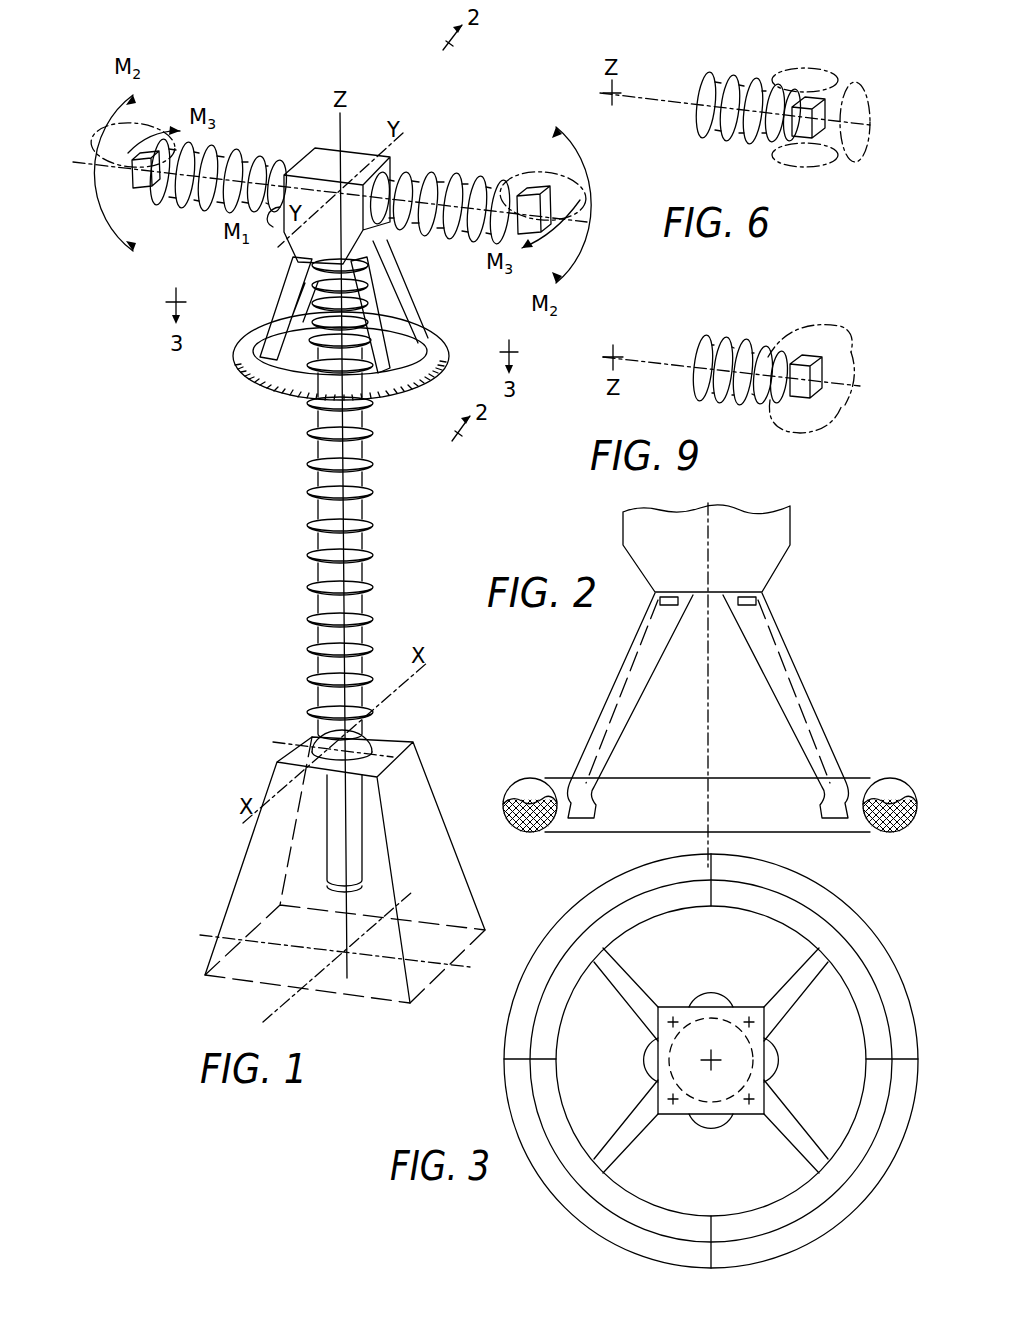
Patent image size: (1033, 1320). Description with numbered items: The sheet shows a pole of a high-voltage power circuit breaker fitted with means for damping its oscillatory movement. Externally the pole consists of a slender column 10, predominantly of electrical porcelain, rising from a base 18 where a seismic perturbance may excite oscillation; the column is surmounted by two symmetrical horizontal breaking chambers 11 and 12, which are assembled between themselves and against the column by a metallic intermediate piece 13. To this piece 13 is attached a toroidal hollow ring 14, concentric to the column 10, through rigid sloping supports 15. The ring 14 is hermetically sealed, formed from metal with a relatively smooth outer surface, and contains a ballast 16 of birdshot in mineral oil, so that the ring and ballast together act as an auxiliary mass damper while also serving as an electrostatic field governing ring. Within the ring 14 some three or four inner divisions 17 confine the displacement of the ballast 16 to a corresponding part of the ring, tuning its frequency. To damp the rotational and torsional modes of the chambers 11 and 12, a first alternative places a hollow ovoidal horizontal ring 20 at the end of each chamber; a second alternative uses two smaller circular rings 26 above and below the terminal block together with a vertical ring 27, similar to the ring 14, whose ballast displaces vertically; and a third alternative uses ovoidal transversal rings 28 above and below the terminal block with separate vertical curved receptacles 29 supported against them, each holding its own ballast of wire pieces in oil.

In FIG. 1, the slender column 10 is at (310, 602).
In FIG. 1, the breaking chamber 11 is at (229, 166).
In FIG. 1, the breaking chamber 12 is at (470, 199).
In FIG. 6, the breaking chamber 12 is at (696, 93).
In FIG. 9, the breaking chamber 12 is at (697, 353).
In FIG. 1, the metallic intermediate piece 13 is at (293, 250).
In FIG. 2, the metallic intermediate piece 13 is at (706, 548).
In FIG. 3, the metallic intermediate piece 13 is at (711, 1061).
In FIG. 1, the toroidal hollow ring 14 is at (388, 392).
In FIG. 2, the toroidal hollow ring 14 is at (897, 785).
In FIG. 3, the toroidal hollow ring 14 is at (877, 919).
In FIG. 1, the rigid sloping supports 15 is at (414, 307).
In FIG. 2, the rigid sloping supports 15 is at (815, 700).
In FIG. 3, the rigid sloping supports 15 is at (755, 970).
In FIG. 2, the ballast 16 is at (522, 833).
In FIG. 3, the inner divisions 17 is at (547, 1058).
In FIG. 1, the base 18 is at (425, 771).
In FIG. 1, the horizontal toroidal ring 20 is at (148, 123).
In FIG. 6, the circular rings 26 is at (812, 70).
In FIG. 6, the vertical ring 27 is at (856, 163).
In FIG. 9, the ovoidal transversal rings 28 is at (797, 325).
In FIG. 9, the vertical curved receptacles 29 is at (850, 348).